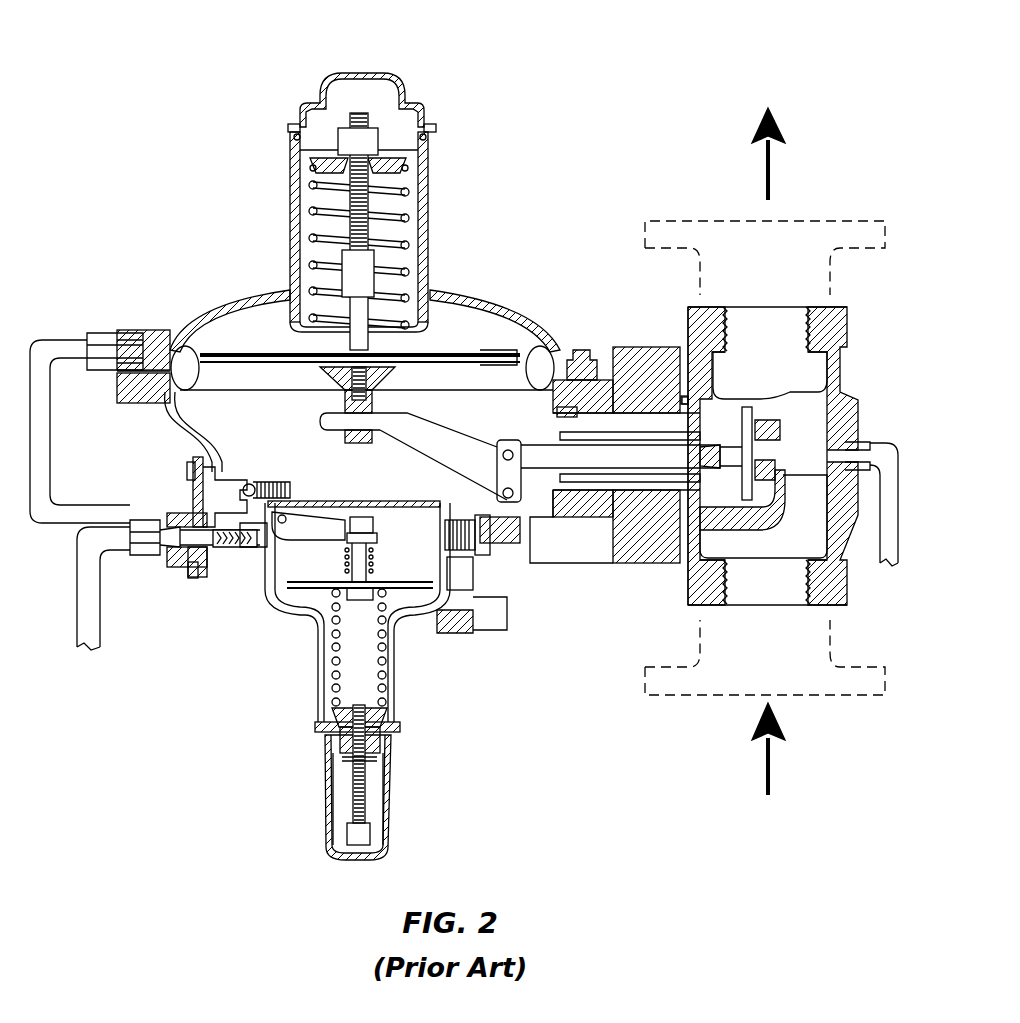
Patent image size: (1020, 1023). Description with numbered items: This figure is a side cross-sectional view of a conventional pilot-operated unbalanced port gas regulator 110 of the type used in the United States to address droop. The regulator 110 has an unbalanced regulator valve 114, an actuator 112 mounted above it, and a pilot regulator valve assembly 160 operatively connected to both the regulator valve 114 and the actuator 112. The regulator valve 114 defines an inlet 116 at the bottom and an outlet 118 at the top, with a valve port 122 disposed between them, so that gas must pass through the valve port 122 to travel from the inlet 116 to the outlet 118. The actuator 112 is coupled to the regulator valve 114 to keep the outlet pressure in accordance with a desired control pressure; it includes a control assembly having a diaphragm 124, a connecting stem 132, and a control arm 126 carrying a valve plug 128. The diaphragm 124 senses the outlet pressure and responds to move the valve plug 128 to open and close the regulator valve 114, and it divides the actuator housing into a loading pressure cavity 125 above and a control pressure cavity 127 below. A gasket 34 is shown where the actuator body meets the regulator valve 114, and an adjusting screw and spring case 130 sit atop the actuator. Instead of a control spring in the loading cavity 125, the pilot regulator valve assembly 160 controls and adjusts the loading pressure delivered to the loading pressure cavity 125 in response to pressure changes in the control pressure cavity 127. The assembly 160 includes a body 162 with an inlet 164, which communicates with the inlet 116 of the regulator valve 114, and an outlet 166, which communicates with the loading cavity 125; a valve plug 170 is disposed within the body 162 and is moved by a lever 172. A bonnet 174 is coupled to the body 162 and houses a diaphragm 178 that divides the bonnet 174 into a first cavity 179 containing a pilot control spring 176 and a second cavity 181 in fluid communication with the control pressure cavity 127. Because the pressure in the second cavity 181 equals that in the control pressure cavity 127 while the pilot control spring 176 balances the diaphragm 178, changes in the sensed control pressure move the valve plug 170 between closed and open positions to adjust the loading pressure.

The regulator 110 is at (478, 46).
The actuator 112 is at (288, 280).
The unbalanced regulator valve 114 is at (815, 180).
The inlet 116 is at (783, 590).
The outlet 118 is at (783, 315).
The valve port 122 is at (177, 404).
The diaphragm 124 is at (183, 330).
The loading pressure cavity 125 is at (243, 332).
The control arm 126 is at (430, 430).
The control pressure cavity 127 is at (173, 403).
The valve plug 128 is at (752, 413).
The spring 130 is at (408, 188).
The connecting stem 132 is at (366, 308).
The gasket 34 is at (691, 393).
The pilot regulator valve assembly 160 is at (260, 684).
The body 162 is at (183, 558).
The inlet 164 is at (167, 550).
The outlet 166 is at (217, 502).
The valve plug 170 is at (231, 577).
The lever 172 is at (267, 537).
The bonnet 174 is at (395, 693).
The pilot control spring 176 is at (387, 662).
The diaphragm 178 is at (418, 584).
The first cavity 179 is at (432, 607).
The second cavity 181 is at (443, 565).